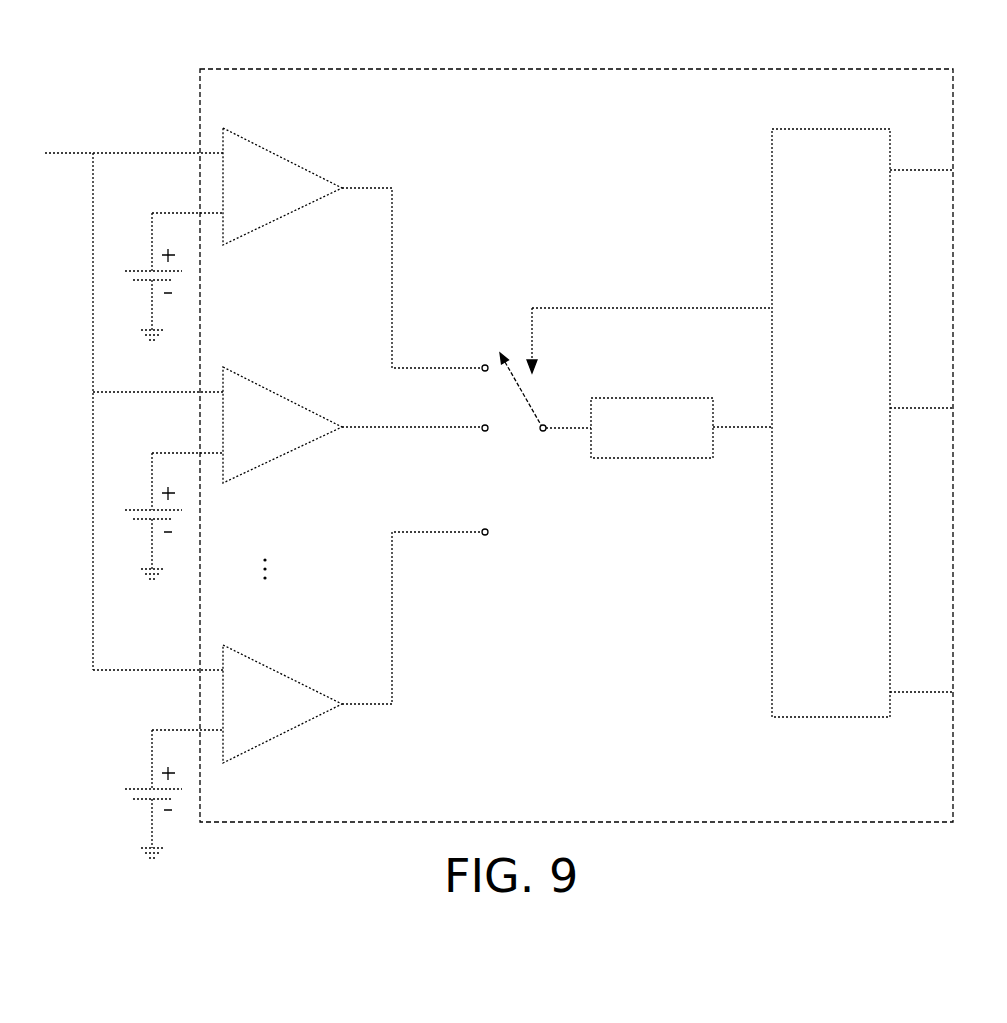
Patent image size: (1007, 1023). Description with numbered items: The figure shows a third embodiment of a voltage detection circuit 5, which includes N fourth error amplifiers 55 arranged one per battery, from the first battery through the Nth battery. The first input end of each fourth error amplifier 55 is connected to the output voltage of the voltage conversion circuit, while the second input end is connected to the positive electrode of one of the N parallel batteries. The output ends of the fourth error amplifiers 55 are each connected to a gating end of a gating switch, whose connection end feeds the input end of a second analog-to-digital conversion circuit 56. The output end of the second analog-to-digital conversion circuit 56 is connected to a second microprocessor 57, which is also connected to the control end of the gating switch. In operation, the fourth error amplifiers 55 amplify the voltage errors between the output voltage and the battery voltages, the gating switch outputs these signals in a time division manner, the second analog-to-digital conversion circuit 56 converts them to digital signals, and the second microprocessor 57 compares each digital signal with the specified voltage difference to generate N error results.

The voltage detection circuit 5 is at (521, 70).
The fourth error amplifier 55 is at (269, 149).
The second analog-to-digital conversion circuit 56 is at (645, 398).
The second microprocessor 57 is at (830, 135).